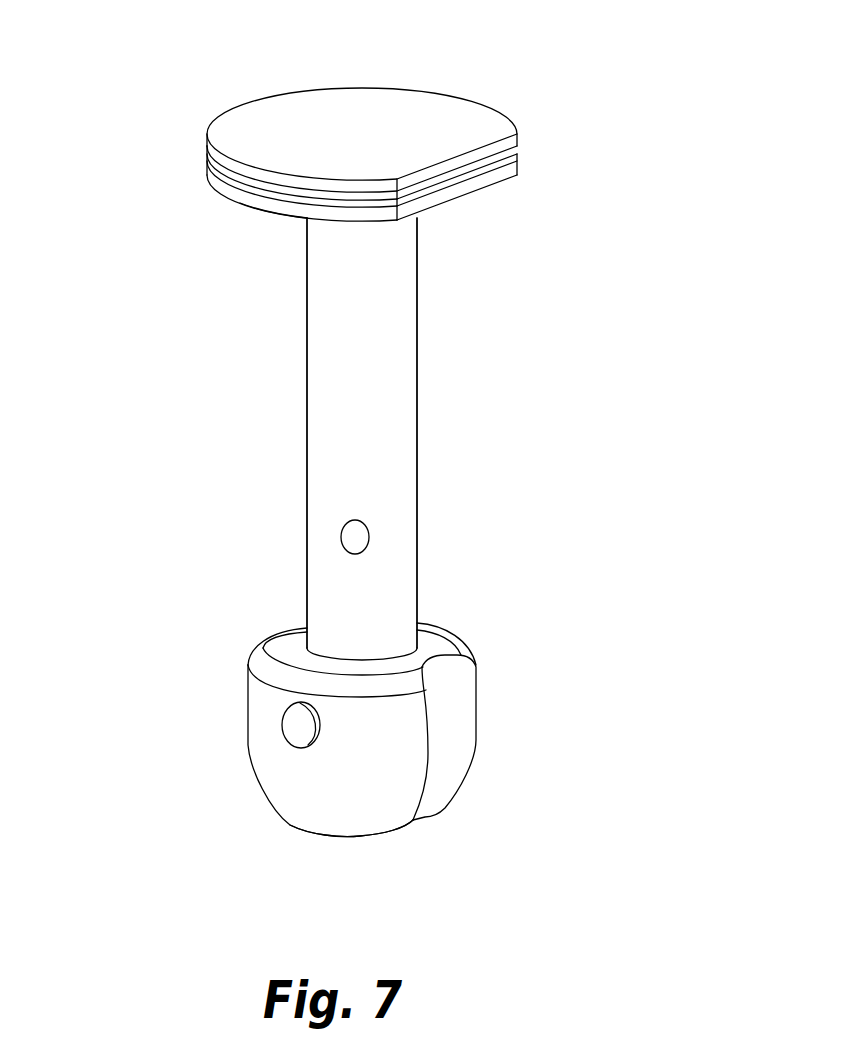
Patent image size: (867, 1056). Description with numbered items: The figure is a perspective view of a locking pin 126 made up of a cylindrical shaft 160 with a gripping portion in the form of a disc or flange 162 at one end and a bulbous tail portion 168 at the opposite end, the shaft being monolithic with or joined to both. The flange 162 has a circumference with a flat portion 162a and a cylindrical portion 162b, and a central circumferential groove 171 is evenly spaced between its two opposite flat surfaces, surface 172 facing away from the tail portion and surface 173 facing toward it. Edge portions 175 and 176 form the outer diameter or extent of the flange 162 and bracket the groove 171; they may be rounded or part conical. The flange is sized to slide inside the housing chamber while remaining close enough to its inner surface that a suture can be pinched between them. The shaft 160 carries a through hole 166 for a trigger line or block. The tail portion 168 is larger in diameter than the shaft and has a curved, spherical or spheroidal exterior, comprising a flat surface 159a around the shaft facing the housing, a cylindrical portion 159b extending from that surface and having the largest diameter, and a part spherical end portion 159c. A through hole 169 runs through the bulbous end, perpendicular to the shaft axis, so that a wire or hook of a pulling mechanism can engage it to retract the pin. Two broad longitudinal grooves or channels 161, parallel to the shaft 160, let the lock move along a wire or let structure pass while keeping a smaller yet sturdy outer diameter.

The locking pin 126 is at (497, 317).
The flat surface 159a is at (428, 638).
The cylindrical portion 159b is at (263, 688).
The part spherical end portion 159c is at (357, 808).
The cylindrical shaft 160 is at (320, 453).
The longitudinal groove 161 is at (290, 633).
The flange 162 is at (468, 97).
The flat portion 162a is at (540, 168).
The cylindrical portion 162b is at (202, 204).
The through hole 166 is at (352, 543).
The tail portion 168 is at (285, 771).
The through hole 169 is at (290, 725).
The central circumferential groove 171 is at (212, 165).
The flat surface 172 is at (287, 117).
The flat surface 173 is at (240, 208).
The edge portion 175 is at (517, 144).
The edge portion 176 is at (278, 208).